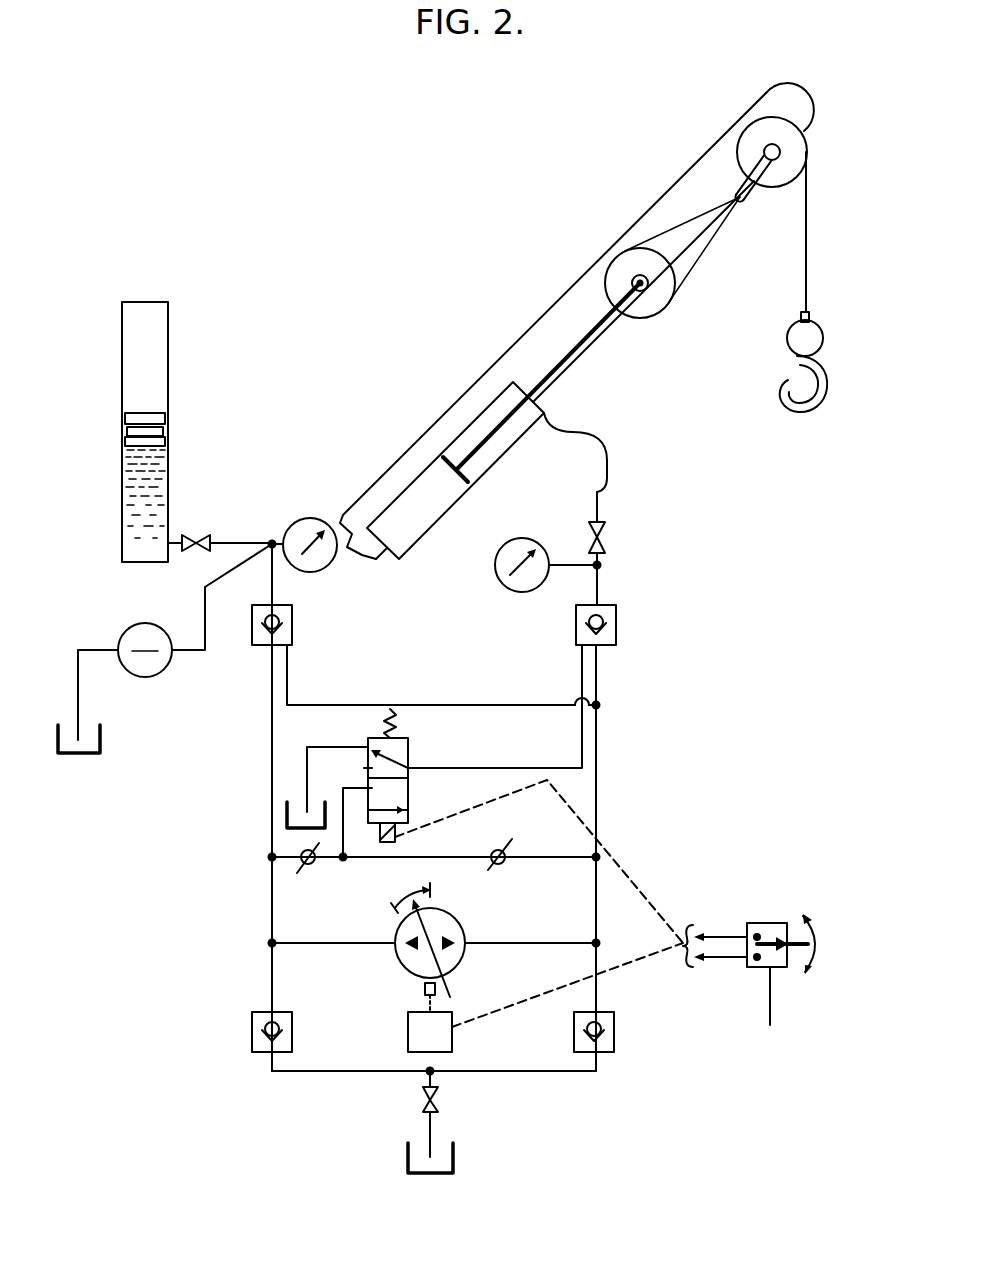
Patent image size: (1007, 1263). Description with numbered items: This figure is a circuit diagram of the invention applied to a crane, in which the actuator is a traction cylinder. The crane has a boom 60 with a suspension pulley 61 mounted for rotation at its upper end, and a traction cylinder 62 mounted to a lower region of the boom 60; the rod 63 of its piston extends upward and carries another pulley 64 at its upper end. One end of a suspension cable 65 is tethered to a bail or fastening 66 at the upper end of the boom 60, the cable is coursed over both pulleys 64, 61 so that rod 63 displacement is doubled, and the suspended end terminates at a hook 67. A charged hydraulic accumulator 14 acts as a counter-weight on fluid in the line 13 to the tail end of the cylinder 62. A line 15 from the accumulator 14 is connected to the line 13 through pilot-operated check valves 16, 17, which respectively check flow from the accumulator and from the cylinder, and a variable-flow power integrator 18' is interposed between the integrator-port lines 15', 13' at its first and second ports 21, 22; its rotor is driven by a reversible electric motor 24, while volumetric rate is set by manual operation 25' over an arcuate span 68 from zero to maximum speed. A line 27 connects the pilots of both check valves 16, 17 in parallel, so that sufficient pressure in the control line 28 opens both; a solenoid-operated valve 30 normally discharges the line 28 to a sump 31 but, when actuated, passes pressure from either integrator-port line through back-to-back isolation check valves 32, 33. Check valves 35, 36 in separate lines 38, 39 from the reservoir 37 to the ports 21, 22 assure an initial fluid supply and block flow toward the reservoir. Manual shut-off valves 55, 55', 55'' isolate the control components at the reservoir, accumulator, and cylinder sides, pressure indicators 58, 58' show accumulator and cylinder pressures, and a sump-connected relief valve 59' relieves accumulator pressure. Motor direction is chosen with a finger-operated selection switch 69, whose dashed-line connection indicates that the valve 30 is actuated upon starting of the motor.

The line 13 is at (597, 467).
The integrator-port line 13' is at (625, 812).
The hydraulic accumulator 14 is at (175, 335).
The line 15 is at (246, 789).
The integrator-port line 15' is at (289, 820).
The pilot-operated check valve 16 is at (295, 625).
The pilot-operated check valve 17 is at (576, 622).
The power integrator 18' is at (461, 948).
The first flow-connection port 21 is at (377, 948).
The second flow-connection port 22 is at (483, 948).
The reversible electric motor 24 is at (408, 1021).
The manual operation 25' is at (466, 1000).
The line 27 is at (417, 705).
The control line 28 is at (433, 768).
The solenoid-operated valve 30 is at (414, 790).
The sump 31 is at (330, 812).
The isolation check valve 32 is at (299, 863).
The isolation check valve 33 is at (514, 845).
The check valve 35 is at (251, 1028).
The check valve 36 is at (616, 1015).
The reservoir 37 is at (455, 1153).
The line 38 is at (313, 1073).
The line 39 is at (541, 1073).
The manual shut-off valve 55 is at (454, 1114).
The manual shut-off valve 55' is at (197, 527).
The manual shut-off valve 55'' is at (620, 536).
The pressure indicator 58 is at (310, 529).
The pressure indicator 58' is at (544, 552).
The relief valve 59' is at (165, 648).
The boom 60 is at (536, 323).
The suspension pulley 61 is at (805, 157).
The traction cylinder 62 is at (420, 467).
The rod 63 is at (541, 382).
The pulley 64 is at (617, 262).
The suspension cable 65 is at (808, 246).
The bail or fastening 66 is at (750, 203).
The hook 67 is at (823, 342).
The arcuate span 68 is at (406, 896).
The selection switch 69 is at (765, 923).